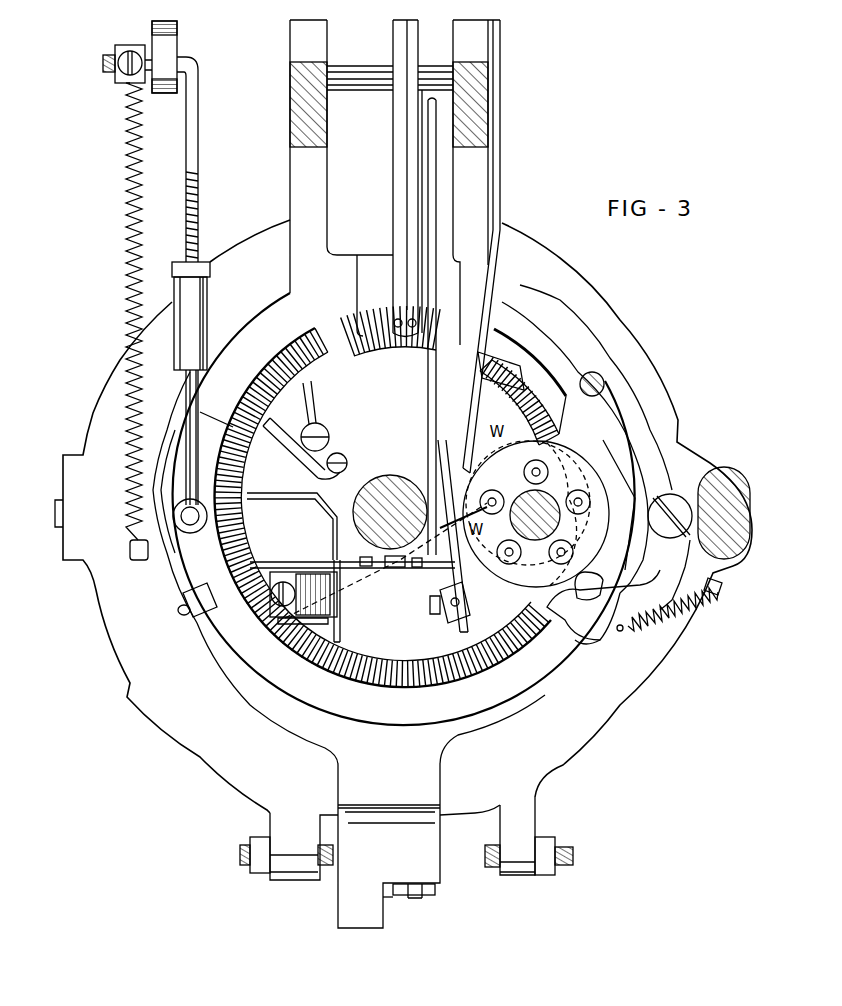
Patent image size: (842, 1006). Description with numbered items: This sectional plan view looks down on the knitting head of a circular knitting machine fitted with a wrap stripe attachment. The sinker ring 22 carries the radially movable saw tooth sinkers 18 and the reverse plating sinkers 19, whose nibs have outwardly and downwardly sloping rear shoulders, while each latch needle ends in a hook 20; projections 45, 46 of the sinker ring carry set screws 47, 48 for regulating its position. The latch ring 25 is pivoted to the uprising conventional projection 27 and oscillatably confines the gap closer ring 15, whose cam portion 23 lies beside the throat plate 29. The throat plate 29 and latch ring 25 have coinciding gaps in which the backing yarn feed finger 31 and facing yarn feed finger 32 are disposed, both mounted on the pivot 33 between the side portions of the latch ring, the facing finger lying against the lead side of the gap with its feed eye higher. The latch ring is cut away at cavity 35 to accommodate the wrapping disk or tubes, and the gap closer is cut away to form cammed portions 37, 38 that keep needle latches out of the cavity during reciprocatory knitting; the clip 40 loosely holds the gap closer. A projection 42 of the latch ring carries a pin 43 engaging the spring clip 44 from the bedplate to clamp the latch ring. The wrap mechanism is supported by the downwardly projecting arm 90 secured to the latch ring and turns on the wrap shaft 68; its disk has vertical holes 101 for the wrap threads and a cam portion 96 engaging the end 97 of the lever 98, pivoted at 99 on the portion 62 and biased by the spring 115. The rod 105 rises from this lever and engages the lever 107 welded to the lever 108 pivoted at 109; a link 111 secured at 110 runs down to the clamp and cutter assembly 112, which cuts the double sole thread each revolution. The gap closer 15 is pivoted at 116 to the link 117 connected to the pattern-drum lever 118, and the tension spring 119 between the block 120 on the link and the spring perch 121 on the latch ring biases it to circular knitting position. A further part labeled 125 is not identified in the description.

The gap closer ring 15 is at (428, 722).
The saw tooth sinkers 18 is at (318, 408).
The reverse plating sinkers 19 is at (330, 437).
The hook 20 is at (537, 398).
The sinker ring 22 is at (612, 722).
The cam portion 23 is at (318, 343).
The latch ring 25 is at (540, 698).
The uprising conventional projection 27 is at (290, 118).
The throat plate 29 is at (362, 322).
The backing yarn feed finger 31 is at (392, 210).
The facing yarn feed finger 32 is at (393, 160).
The pivot 33 is at (355, 66).
The cut away cavity 35 is at (572, 448).
The cammed portion 37 is at (575, 430).
The cammed portion 38 is at (590, 575).
The clip 40 is at (215, 615).
The projection 42 is at (442, 860).
The pin 43 is at (418, 898).
The spring clip 44 is at (440, 895).
The projection 45 is at (540, 826).
The projection 46 is at (268, 813).
The set screw 47 is at (576, 856).
The set screw 48 is at (240, 865).
The portion 62 is at (752, 525).
The wrap shaft 68 is at (537, 540).
The downwardly projecting arm 90 is at (397, 475).
The cam portion 96 is at (618, 577).
The end of lever 97 is at (565, 618).
The lever 98 is at (610, 642).
The pivot 99 is at (668, 538).
The holes 101 is at (523, 472).
The rod 105 is at (600, 378).
The lever 107 is at (412, 385).
The lever 108 is at (455, 628).
The pivot 109 is at (494, 365).
The securing point 110 is at (470, 605).
The link 111 is at (400, 590).
The clamp and cutter assembly 112 is at (340, 620).
The spring 115 is at (690, 605).
The pivot 116 is at (192, 533).
The link 117 is at (203, 405).
The lever 118 is at (178, 45).
The tension spring 119 is at (124, 268).
The block 120 is at (113, 50).
The spring perch 121 is at (130, 552).
The lever 125 is at (503, 268).